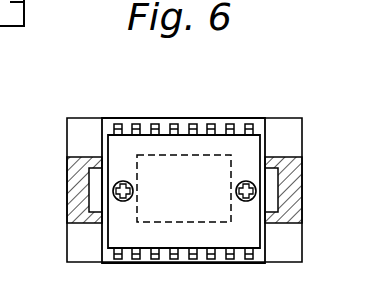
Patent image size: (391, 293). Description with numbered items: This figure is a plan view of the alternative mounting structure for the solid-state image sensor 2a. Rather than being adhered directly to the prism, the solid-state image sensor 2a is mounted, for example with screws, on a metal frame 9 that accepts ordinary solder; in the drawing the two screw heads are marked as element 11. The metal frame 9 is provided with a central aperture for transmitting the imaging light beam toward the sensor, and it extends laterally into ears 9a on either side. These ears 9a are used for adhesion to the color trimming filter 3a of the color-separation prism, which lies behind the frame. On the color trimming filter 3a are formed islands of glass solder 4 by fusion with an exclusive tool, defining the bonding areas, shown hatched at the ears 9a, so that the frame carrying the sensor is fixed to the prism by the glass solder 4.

The color trimming filter 3a is at (86, 130).
The solid-state image sensor 2a is at (247, 152).
The metal frame 9 is at (262, 149).
The ears 9a is at (98, 190).
The screw 11 is at (250, 186).
The glass solder 4 is at (72, 180).